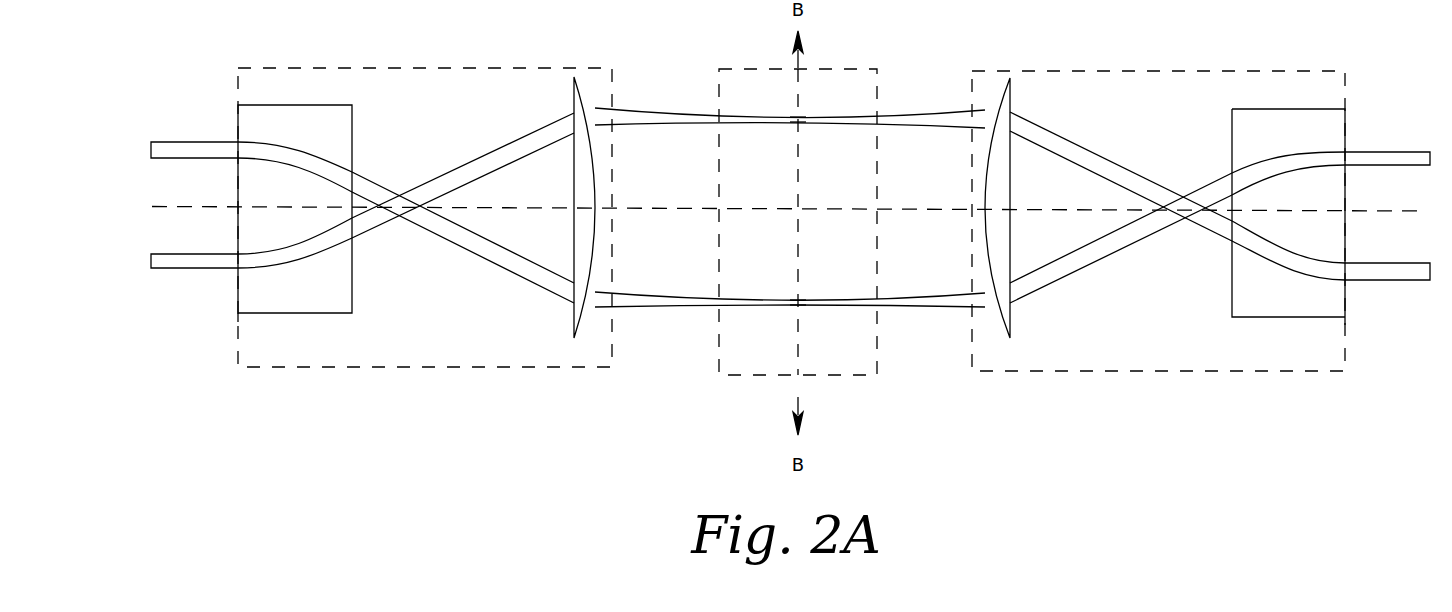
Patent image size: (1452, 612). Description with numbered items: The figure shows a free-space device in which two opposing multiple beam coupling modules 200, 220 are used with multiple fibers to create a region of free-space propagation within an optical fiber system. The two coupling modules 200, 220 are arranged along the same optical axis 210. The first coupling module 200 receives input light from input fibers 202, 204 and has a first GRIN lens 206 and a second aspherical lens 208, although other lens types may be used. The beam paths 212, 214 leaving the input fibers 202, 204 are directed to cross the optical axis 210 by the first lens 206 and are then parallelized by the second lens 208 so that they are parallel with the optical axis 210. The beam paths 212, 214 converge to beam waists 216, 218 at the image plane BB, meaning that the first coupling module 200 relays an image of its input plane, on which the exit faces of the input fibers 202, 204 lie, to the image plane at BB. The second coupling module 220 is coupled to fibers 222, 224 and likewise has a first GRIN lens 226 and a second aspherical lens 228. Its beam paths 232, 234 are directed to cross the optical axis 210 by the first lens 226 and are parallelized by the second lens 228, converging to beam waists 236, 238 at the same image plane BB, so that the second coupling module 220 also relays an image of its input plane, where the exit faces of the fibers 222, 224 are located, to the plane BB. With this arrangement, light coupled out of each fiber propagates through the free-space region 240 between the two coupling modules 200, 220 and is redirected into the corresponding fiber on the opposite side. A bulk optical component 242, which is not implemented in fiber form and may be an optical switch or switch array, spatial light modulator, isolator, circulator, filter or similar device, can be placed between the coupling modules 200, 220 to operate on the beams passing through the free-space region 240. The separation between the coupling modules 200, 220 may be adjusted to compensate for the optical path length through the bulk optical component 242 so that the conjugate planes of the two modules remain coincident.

The first coupling module 200 is at (408, 67).
The input fiber 202 is at (203, 143).
The input fiber 204 is at (218, 268).
The first GRIN lens 206 is at (276, 105).
The second aspherical lens 208 is at (580, 77).
The optical axis 210 is at (225, 207).
The beam path 212 is at (498, 258).
The beam path 214 is at (498, 152).
The beam waist 216 is at (798, 305).
The beam waist 218 is at (798, 118).
The second coupling module 220 is at (1110, 72).
The fiber 222 is at (1418, 157).
The fiber 224 is at (1370, 275).
The first GRIN lens 226 is at (1295, 108).
The second aspherical lens 228 is at (1003, 78).
The beam path 232 is at (1112, 258).
The beam path 234 is at (1130, 183).
The beam waist 236 is at (798, 305).
The beam waist 238 is at (798, 118).
The free-space region 240 is at (680, 177).
The bulk optical component 242 is at (880, 92).